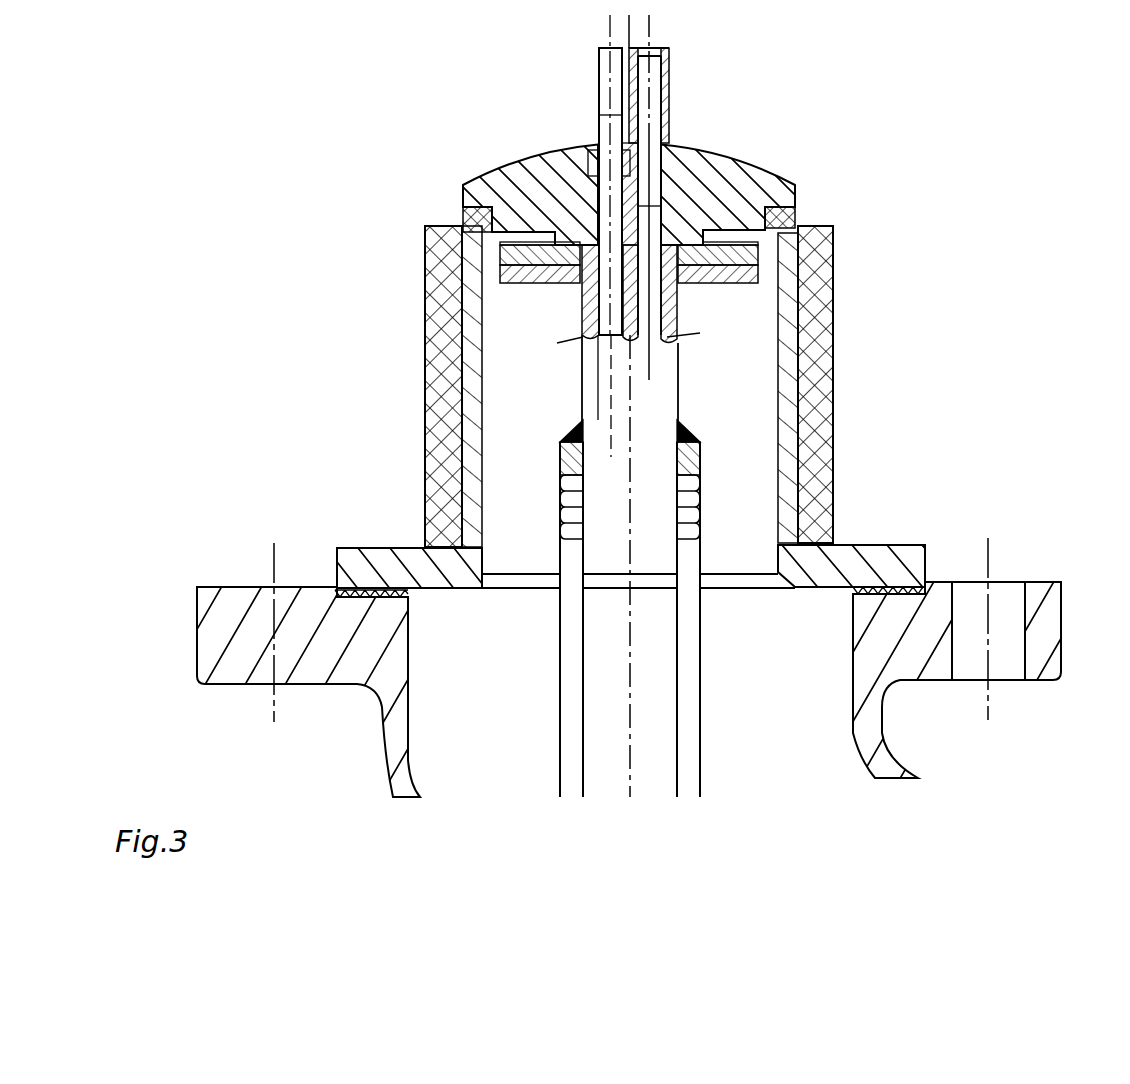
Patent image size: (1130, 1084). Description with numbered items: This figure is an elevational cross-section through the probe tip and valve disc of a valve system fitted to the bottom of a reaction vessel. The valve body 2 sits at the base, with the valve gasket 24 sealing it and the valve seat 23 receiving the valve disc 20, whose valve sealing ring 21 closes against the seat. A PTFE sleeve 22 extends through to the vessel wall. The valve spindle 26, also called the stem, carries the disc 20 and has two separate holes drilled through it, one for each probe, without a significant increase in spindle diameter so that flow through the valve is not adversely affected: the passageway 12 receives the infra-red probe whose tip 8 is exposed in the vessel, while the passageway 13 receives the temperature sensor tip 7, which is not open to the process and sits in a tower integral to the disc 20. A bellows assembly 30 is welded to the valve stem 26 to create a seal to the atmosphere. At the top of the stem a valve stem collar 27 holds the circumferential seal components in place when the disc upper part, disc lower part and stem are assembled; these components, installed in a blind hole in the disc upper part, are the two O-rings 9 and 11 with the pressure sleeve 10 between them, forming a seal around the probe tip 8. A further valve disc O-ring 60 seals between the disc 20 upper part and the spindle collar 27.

The valve body 2 is at (214, 582).
The temperature sensor tip 7 is at (652, 83).
The tip of the infra-red probe 8 is at (598, 58).
The O-ring 9 is at (572, 172).
The pressure sleeve 10 is at (590, 200).
The O-ring 11 is at (572, 208).
The passageway for the probe 12 is at (583, 310).
The passageway for the probe 13 is at (680, 320).
The valve disc 20 is at (770, 152).
The valve sealing ring 21 is at (796, 207).
The PTFE sleeve 22 is at (835, 318).
The valve seat 23 is at (880, 548).
The valve gasket 24 is at (925, 584).
The valve spindle 26 is at (833, 236).
The valve stem collar 27 is at (497, 244).
The bellows assembly 30 is at (554, 490).
The valve disc O-ring 60 is at (475, 208).